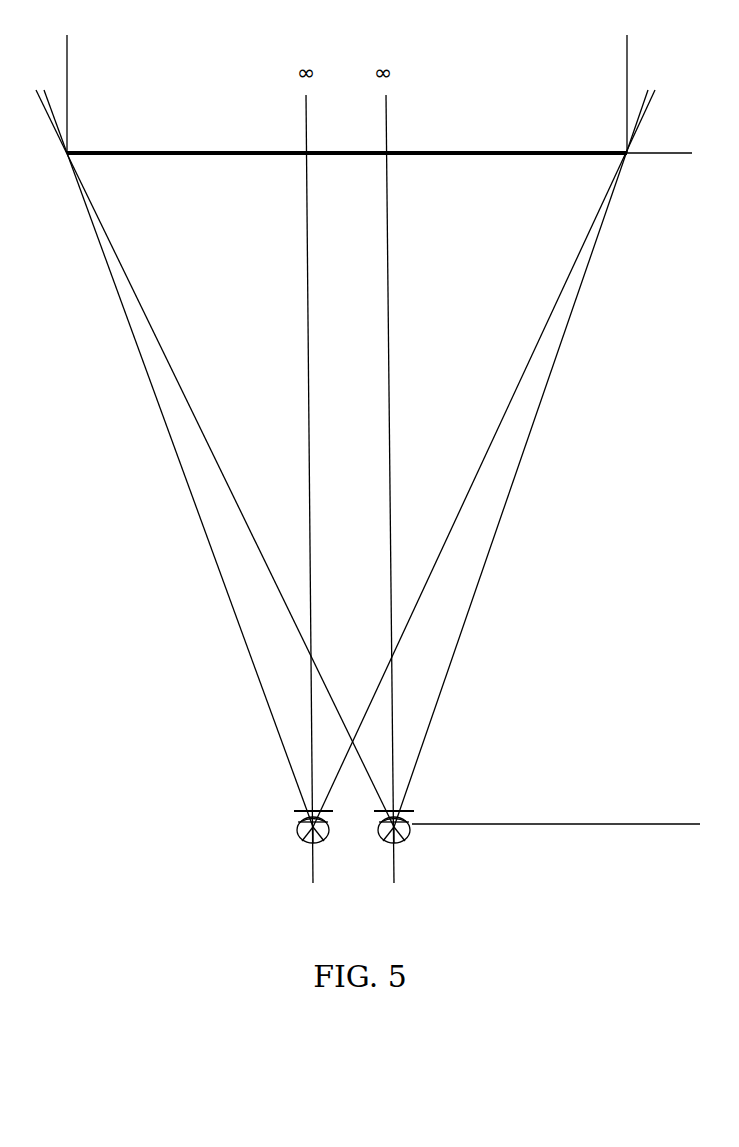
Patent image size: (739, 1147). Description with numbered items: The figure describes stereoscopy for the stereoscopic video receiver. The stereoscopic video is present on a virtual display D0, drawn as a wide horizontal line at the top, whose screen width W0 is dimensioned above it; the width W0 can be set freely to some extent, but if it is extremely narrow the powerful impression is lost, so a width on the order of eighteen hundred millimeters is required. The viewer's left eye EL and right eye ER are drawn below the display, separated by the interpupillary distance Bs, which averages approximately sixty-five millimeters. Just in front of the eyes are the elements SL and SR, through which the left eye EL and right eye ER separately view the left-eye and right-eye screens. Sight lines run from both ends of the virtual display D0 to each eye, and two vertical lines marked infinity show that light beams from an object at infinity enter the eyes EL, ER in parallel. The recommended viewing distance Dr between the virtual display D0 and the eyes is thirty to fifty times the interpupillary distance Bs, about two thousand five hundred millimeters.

The virtual display D0 is at (224, 148).
The screen width W0 is at (627, 43).
The recommended viewing distance Dr is at (680, 153).
The interpupillary distance Bs is at (394, 872).
The left shutter / stop SL is at (300, 810).
The right shutter / stop SR is at (404, 809).
The left eye EL is at (299, 834).
The right eye ER is at (409, 835).